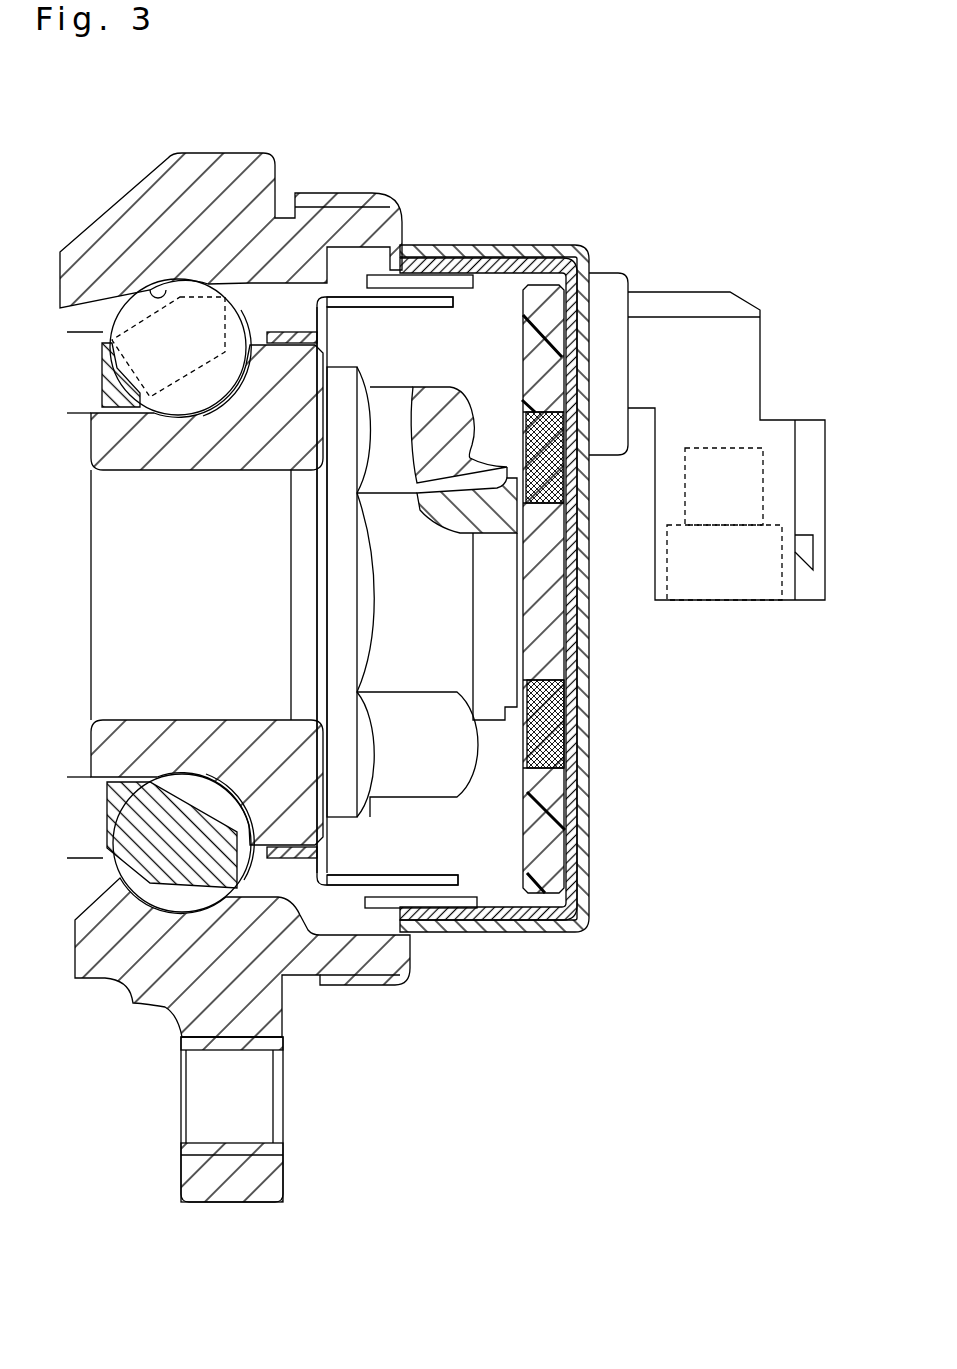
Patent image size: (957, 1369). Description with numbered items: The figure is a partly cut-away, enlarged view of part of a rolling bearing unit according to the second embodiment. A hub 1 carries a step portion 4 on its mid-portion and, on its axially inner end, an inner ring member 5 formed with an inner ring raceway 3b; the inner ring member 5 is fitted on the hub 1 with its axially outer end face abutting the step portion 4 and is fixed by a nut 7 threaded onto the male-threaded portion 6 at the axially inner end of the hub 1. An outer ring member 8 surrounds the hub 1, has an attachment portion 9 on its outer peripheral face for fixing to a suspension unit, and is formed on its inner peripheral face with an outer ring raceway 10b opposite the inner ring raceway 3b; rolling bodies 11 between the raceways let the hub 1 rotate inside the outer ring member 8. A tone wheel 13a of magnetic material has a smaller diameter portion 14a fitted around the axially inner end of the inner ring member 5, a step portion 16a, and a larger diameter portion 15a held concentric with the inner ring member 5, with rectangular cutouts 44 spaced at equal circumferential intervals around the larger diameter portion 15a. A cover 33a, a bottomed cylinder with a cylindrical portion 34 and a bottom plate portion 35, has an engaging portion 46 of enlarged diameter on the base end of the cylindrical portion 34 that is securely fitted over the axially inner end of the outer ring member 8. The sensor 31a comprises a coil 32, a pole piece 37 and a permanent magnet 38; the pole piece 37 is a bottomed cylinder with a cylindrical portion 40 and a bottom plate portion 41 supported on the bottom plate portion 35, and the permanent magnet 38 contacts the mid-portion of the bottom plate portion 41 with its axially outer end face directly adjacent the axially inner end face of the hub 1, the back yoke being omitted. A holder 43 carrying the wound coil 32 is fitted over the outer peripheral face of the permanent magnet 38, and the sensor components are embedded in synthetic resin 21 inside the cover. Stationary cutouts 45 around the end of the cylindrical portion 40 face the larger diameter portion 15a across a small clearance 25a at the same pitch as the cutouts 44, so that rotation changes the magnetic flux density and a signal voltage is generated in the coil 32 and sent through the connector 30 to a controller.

The hub 1 is at (107, 660).
The inner ring raceway 3b is at (203, 405).
The step portion 4 is at (93, 442).
The inner ring member 5 is at (280, 340).
The male-threaded portion 6 is at (303, 563).
The nut 7 is at (458, 795).
The outer ring member 8 is at (207, 173).
The attachment portion 9 is at (243, 1202).
The outer ring raceway 10b is at (150, 285).
The rolling bodies 11 is at (117, 372).
The tone wheel 13a is at (288, 760).
The smaller diameter portion 14a is at (250, 905).
The larger diameter portion 15a is at (357, 885).
The step portion 16a is at (297, 343).
The synthetic resin 21 is at (553, 247).
The small clearance 25a is at (427, 782).
The connector 30 is at (745, 375).
The sensor 31a is at (553, 663).
The coil 32 is at (558, 760).
The cover 33a is at (590, 317).
The cylindrical portion 34 is at (537, 300).
The bottom plate portion 35 is at (585, 648).
The pole piece 37 is at (572, 810).
The permanent magnet 38 is at (558, 607).
The cylindrical portion 40 is at (535, 905).
The bottom plate portion 41 is at (572, 737).
The holder 43 is at (560, 470).
The cutouts 44 is at (402, 303).
The stationary cutouts 45 is at (452, 280).
The engaging portion 46 is at (353, 195).